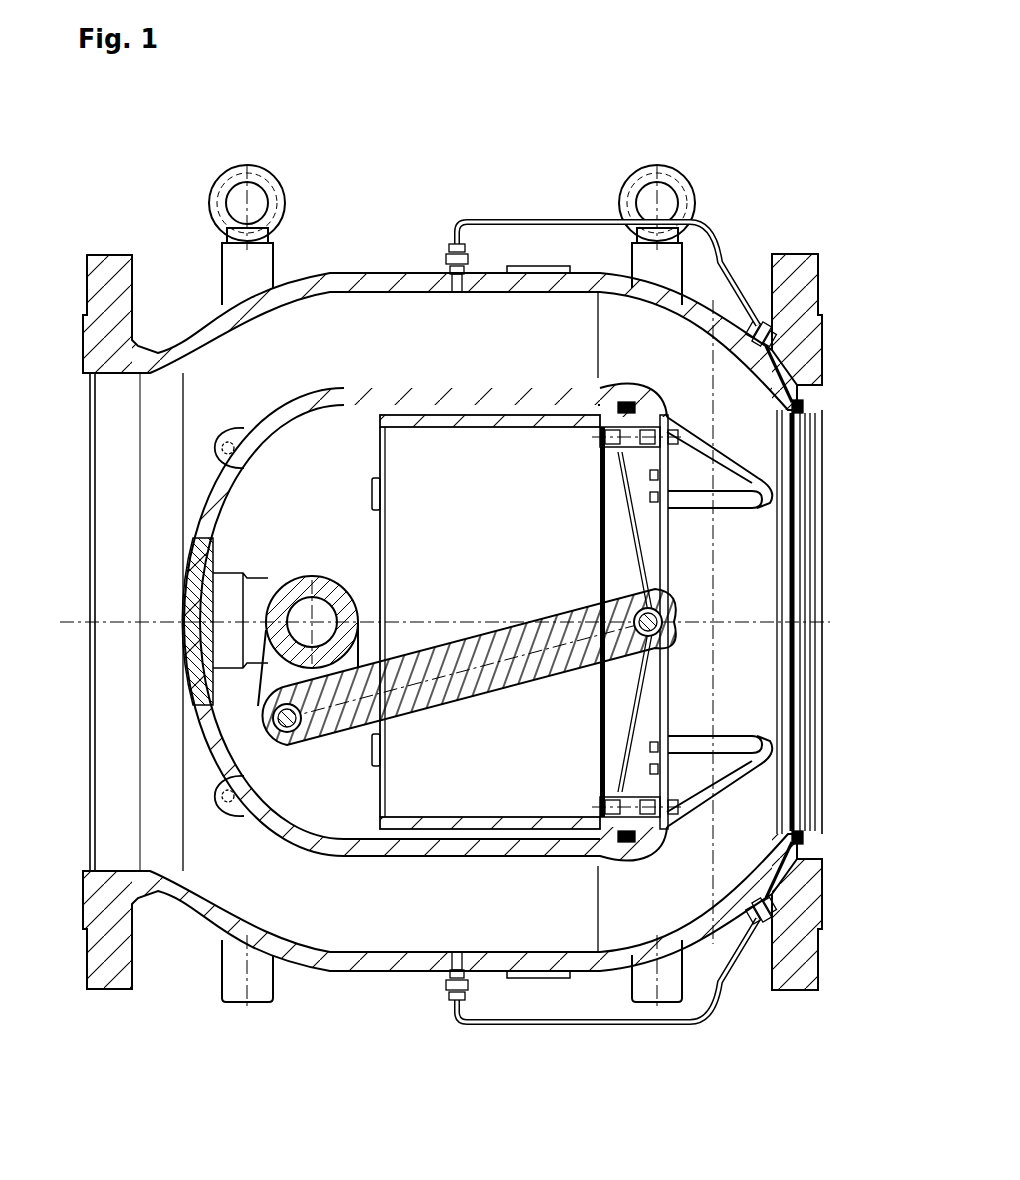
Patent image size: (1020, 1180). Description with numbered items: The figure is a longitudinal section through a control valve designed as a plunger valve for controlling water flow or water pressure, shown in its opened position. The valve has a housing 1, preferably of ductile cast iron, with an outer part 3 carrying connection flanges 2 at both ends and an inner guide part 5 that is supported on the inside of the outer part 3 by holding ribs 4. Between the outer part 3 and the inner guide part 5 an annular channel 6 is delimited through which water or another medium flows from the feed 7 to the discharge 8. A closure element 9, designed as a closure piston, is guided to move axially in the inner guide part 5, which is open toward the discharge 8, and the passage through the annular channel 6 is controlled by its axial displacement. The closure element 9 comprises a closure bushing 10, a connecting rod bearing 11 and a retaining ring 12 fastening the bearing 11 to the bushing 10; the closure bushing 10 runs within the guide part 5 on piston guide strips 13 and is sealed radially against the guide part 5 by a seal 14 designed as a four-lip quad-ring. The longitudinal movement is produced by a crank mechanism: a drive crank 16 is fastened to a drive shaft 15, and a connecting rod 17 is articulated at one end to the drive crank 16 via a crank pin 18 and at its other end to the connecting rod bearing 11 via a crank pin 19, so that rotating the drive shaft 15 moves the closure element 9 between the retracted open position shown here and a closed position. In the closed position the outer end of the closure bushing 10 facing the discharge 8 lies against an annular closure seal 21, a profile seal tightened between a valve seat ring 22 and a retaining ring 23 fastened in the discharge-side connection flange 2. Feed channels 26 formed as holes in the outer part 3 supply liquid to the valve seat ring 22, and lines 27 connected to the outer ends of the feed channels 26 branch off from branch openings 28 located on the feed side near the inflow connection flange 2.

The housing 1 is at (402, 240).
The connection flange 2 is at (107, 265).
The outer part 3 is at (330, 286).
The holding rib 4 is at (232, 455).
The inner guide part 5 is at (415, 392).
The annular channel 6 is at (487, 322).
The feed 7 is at (82, 594).
The discharge 8 is at (822, 600).
The closure element 9 is at (553, 408).
The closure bushing 10 is at (484, 418).
The connecting rod bearing 11 is at (612, 467).
The retaining ring 12 is at (645, 430).
The piston guide strip 13 is at (370, 490).
The seal 14 is at (627, 400).
The drive shaft 15 is at (323, 616).
The drive crank 16 is at (290, 670).
The connecting rod 17 is at (497, 685).
The crank pin 18 is at (280, 730).
The crank pin 19 is at (656, 618).
The closure seal 21 is at (812, 388).
The valve seat ring 22 is at (785, 497).
The retaining ring 23 is at (812, 850).
The feed channel 26 is at (770, 346).
The line 27 is at (588, 220).
The branch opening 28 is at (457, 272).